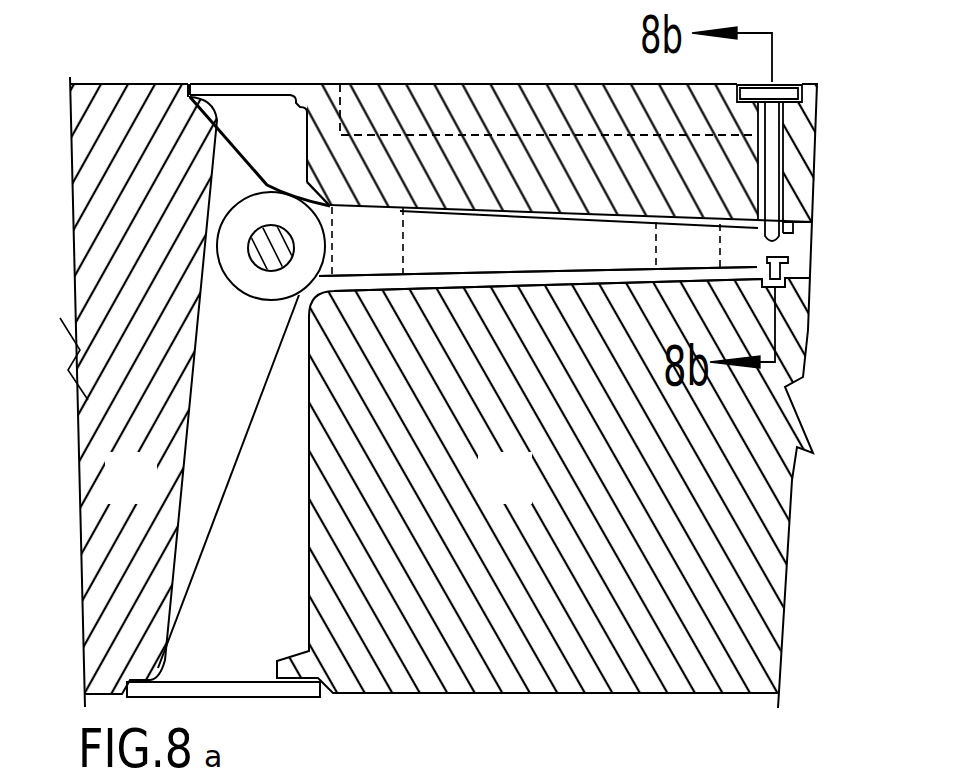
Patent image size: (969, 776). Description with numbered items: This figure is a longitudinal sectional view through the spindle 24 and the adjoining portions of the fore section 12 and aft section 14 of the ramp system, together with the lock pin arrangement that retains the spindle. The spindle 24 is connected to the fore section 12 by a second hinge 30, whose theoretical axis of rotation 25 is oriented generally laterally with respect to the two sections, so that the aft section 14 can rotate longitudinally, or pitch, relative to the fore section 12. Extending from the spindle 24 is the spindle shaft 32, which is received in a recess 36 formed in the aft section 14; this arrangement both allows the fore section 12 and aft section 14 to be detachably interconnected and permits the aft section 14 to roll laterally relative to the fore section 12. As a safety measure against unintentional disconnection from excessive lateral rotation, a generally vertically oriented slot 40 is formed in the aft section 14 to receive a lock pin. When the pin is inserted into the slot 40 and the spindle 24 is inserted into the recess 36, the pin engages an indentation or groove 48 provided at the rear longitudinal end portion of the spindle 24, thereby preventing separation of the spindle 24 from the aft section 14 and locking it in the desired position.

The fore section 12 is at (157, 503).
The aft section 14 is at (528, 503).
The spindle 24 is at (304, 178).
The theoretical axis of rotation 25 is at (258, 228).
The second hinge 30 is at (257, 233).
The spindle shaft 32 is at (373, 257).
The recess 36 is at (430, 292).
The slot 40 is at (735, 88).
The groove 48 is at (790, 256).